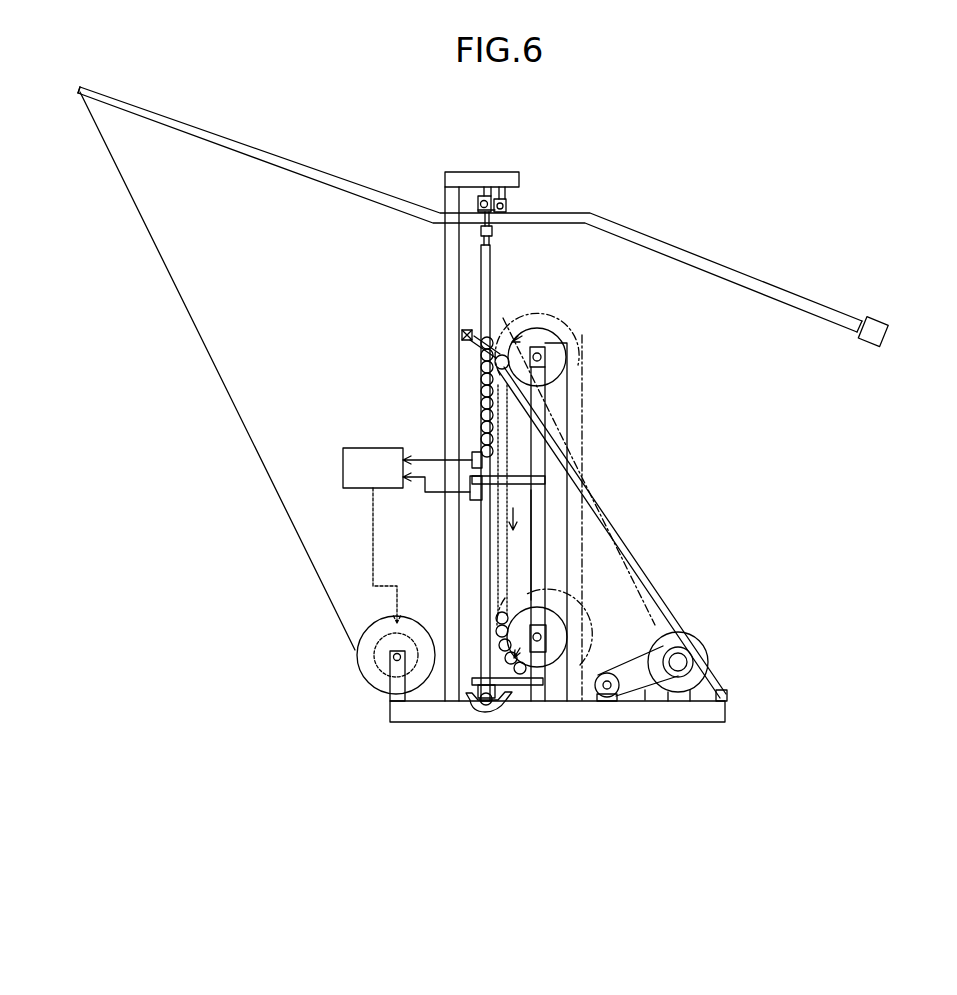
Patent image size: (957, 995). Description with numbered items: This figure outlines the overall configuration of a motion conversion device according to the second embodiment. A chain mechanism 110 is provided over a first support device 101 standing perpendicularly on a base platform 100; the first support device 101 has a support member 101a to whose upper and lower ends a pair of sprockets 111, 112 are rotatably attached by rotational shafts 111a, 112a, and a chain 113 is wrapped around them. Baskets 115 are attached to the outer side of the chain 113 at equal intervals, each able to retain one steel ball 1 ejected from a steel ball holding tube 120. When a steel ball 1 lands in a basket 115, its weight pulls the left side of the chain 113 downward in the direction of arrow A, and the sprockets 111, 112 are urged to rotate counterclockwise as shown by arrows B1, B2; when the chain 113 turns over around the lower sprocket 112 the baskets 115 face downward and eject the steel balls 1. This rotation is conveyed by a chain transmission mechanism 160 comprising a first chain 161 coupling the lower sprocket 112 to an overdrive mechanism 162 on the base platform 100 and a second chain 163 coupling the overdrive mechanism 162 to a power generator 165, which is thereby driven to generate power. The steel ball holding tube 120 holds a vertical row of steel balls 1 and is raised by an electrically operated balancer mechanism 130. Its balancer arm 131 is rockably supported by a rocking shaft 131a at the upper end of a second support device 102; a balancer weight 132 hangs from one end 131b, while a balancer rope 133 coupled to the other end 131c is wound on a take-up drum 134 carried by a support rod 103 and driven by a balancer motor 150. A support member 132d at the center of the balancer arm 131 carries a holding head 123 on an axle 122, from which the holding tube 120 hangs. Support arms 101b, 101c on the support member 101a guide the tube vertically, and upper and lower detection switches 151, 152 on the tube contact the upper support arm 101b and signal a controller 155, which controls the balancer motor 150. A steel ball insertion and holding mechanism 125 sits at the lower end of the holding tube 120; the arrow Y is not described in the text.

The steel ball 1 is at (480, 392).
The base platform 100 is at (568, 717).
The first support device 101 is at (561, 518).
The support member 101a is at (545, 553).
The upper support arm 101b is at (520, 475).
The lower support arm 101c is at (518, 690).
The second support device 102 is at (441, 360).
The support rod 103 is at (397, 686).
The chain mechanism 110 is at (621, 373).
The upper sprocket 111 is at (565, 333).
The rotational shaft 111a is at (548, 356).
The lower sprocket 112 is at (567, 631).
The rotational shaft 112a is at (548, 640).
The chain 113 is at (575, 410).
The basket 115 is at (499, 322).
The steel ball holding tube 120 is at (469, 306).
The axle 122 is at (478, 200).
The holding head 123 is at (489, 233).
The steel ball insertion and holding mechanism 125 is at (472, 700).
The balancer mechanism 130 is at (665, 205).
The balancer arm 131 is at (650, 236).
The rocking shaft 131a is at (507, 208).
The end of balancer arm 131b is at (860, 318).
The other end of balancer arm 131c is at (84, 86).
The balancer weight 132 is at (876, 326).
The support member 132d is at (478, 210).
The balancer rope 133 is at (191, 314).
The take-up drum 134 is at (366, 681).
The balancer motor 150 is at (355, 662).
The upper detection switch 151 is at (472, 455).
The lower detection switch 152 is at (470, 500).
The controller 155 is at (373, 468).
The chain transmission mechanism 160 is at (649, 708).
The first chain 161 is at (625, 706).
The overdrive mechanism 162 is at (608, 684).
The second chain 163 is at (648, 616).
The power generator 165 is at (710, 650).
The arrow A is at (516, 515).
The arrow B1 is at (540, 600).
The arrow B2 is at (530, 325).
The direction Y is at (518, 638).